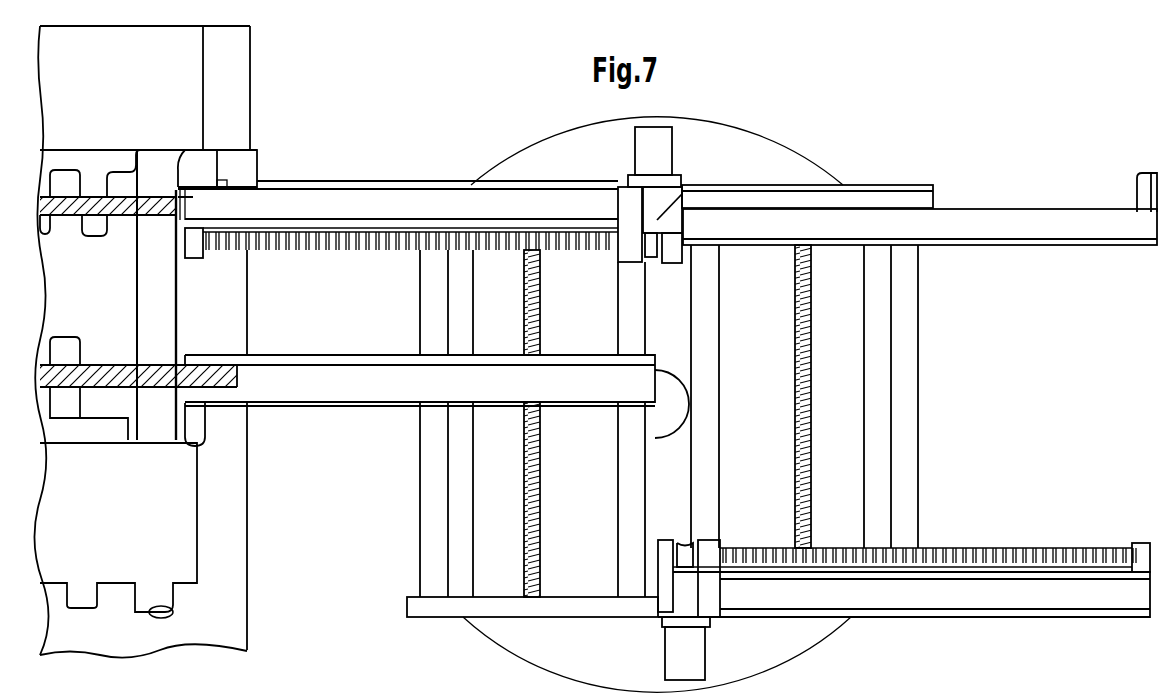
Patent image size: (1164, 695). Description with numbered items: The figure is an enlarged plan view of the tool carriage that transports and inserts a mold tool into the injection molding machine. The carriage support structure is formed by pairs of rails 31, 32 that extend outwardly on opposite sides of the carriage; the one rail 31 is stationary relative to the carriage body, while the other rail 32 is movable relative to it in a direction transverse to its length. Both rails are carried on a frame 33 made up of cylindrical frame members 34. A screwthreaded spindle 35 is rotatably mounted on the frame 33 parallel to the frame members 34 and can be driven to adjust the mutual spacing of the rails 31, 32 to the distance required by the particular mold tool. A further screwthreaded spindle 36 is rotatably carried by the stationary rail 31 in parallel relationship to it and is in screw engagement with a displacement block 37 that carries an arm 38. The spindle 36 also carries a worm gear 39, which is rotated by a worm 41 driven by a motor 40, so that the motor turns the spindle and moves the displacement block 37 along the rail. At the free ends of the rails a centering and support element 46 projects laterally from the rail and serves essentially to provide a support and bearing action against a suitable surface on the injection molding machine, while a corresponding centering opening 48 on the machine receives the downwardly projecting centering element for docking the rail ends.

The stationary rail 31 is at (405, 196).
The movable rail 32 is at (1057, 233).
The frame 33 is at (418, 605).
The cylindrical frame members 34 is at (420, 483).
The screwthreaded spindle 35 is at (538, 450).
The screwthreaded spindle 36 is at (323, 248).
The displacement block 37 is at (641, 379).
The arm 38 is at (622, 188).
The worm gear 39 is at (647, 258).
The motor 40 is at (667, 153).
The worm 41 is at (657, 220).
The centering and support element 46 is at (1143, 183).
The centering opening 48 is at (213, 240).